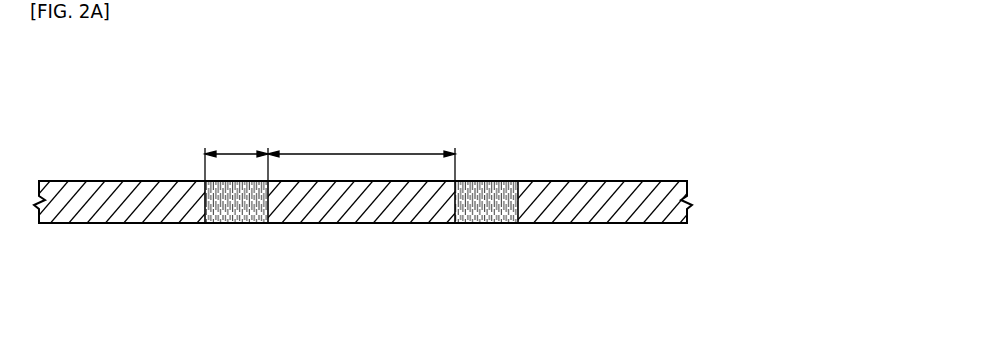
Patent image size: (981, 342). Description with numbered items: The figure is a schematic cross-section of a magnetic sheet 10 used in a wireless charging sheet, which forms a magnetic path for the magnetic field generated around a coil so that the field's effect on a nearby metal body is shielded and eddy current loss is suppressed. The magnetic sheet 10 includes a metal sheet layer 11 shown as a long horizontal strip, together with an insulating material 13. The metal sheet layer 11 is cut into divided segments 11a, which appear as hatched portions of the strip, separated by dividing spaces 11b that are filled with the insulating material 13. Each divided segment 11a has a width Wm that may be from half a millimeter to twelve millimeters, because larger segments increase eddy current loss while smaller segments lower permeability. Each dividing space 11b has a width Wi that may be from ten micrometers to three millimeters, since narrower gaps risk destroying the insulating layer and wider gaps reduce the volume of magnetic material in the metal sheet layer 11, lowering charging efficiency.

The magnetic sheet 10 is at (63, 96).
The metal sheet layer 11 is at (697, 200).
The divided segment 11a is at (122, 224).
The dividing space 11b is at (266, 218).
The insulating material 13 is at (215, 192).